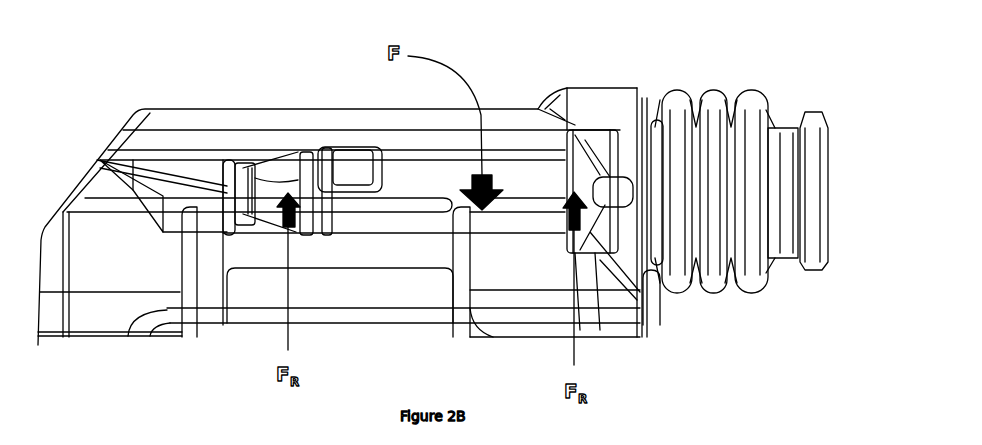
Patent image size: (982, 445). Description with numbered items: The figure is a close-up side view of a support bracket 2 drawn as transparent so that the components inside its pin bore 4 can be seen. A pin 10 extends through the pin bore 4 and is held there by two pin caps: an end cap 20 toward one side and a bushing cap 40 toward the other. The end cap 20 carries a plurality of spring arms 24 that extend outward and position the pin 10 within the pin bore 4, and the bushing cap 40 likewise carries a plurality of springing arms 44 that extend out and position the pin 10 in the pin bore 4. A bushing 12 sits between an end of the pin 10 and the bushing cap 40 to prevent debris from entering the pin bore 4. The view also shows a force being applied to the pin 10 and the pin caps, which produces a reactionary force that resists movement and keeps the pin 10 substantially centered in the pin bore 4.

The support bracket 2 is at (109, 325).
The pin bore 4 is at (187, 172).
The end cap 20 is at (240, 172).
The spring arms 24 is at (300, 167).
The springing arms 44 is at (587, 183).
The bushing cap 40 is at (627, 138).
The bushing 12 is at (714, 102).
The pin 10 is at (811, 118).